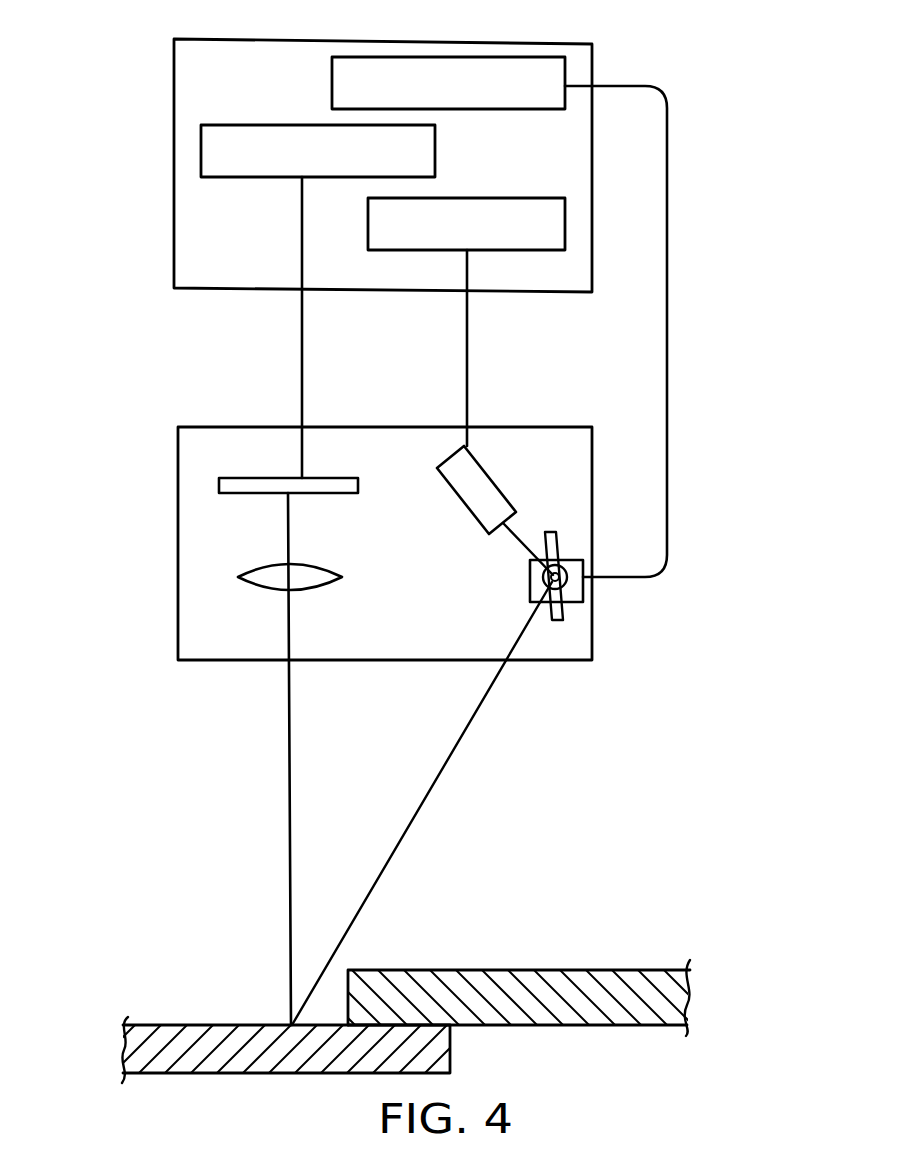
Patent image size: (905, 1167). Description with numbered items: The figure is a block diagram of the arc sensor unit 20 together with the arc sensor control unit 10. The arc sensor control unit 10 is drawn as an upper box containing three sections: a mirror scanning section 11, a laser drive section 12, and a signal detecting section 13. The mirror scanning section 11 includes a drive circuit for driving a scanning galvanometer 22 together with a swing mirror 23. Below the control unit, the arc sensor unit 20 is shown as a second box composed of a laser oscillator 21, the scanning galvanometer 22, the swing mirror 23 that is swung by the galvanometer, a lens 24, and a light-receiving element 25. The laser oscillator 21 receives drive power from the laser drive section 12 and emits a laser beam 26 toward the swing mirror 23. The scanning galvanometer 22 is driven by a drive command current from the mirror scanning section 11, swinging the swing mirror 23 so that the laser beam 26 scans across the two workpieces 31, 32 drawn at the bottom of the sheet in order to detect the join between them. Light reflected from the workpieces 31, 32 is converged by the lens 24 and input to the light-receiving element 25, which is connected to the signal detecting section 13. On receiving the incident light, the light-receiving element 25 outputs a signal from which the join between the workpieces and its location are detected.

The arc sensor control unit 10 is at (592, 60).
The mirror scanning section 11 is at (403, 58).
The laser drive section 12 is at (542, 198).
The signal detecting section 13 is at (200, 128).
The arc sensor unit 20 is at (592, 635).
The laser oscillator 21 is at (478, 463).
The scanning galvanometer 22 is at (583, 560).
The swing mirror 23 is at (559, 620).
The lens 24 is at (238, 577).
The light-receiving element 25 is at (218, 488).
The laser beam 26 is at (442, 763).
The workpiece 31 is at (502, 970).
The workpiece 32 is at (188, 1025).